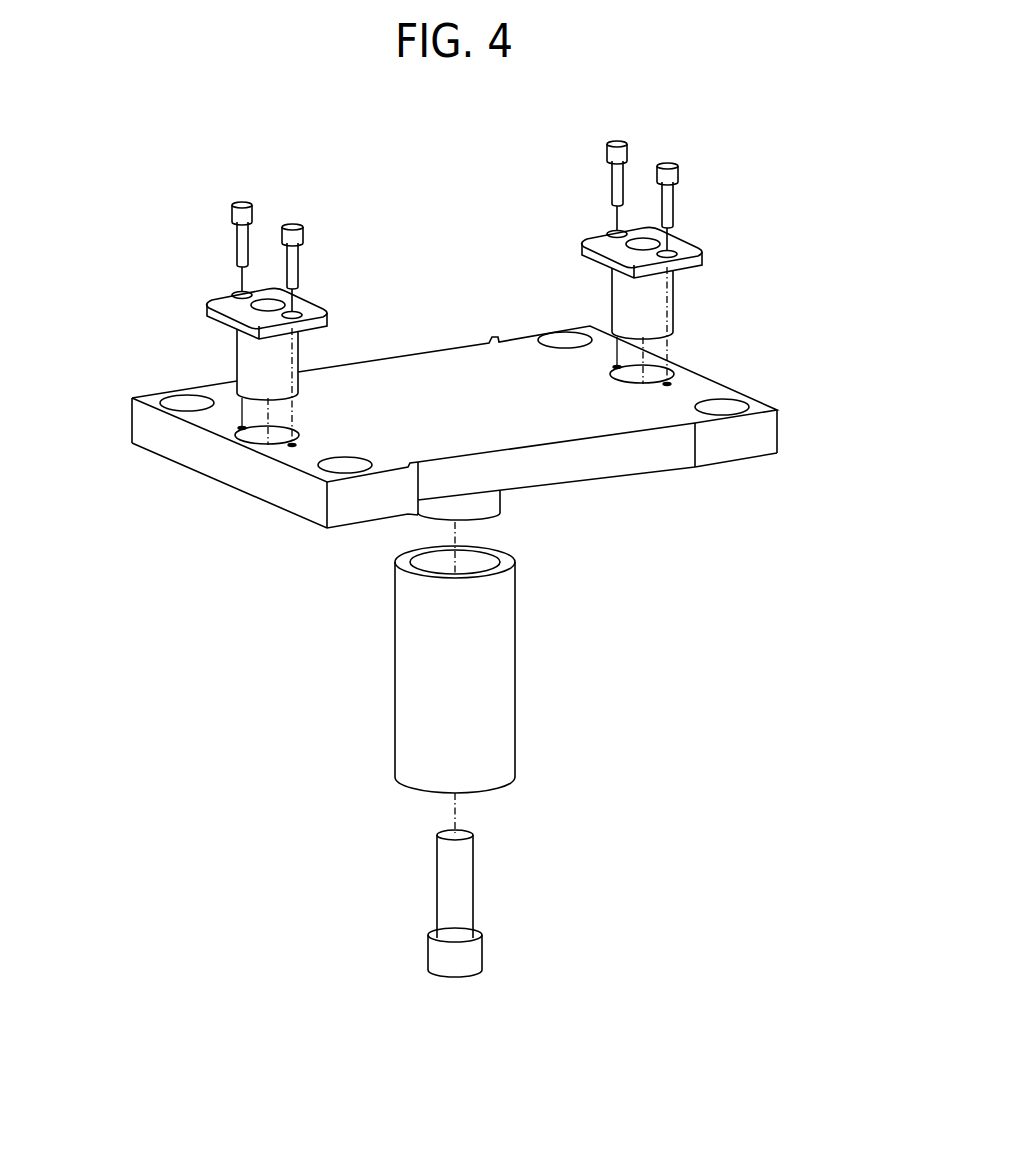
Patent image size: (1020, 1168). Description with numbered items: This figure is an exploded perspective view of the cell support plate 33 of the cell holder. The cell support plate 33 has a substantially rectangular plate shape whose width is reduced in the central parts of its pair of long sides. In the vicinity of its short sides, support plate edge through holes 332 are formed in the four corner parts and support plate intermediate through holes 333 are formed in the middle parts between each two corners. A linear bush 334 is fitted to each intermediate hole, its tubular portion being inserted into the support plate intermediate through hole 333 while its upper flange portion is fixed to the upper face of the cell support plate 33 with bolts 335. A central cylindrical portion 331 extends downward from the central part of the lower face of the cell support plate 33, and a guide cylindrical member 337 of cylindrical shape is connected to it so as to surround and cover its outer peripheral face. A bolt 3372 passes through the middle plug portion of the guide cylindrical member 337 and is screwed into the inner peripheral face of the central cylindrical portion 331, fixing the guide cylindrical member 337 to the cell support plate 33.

The cell support plate 33 is at (780, 432).
The central cylindrical portion 331 is at (495, 500).
The support plate edge through hole 332 is at (173, 405).
The support plate intermediate through hole 333 is at (253, 433).
The linear bush 334 is at (186, 302).
The bolt 335 is at (292, 227).
The guide cylindrical member 337 is at (515, 665).
The bolt 3372 is at (482, 953).